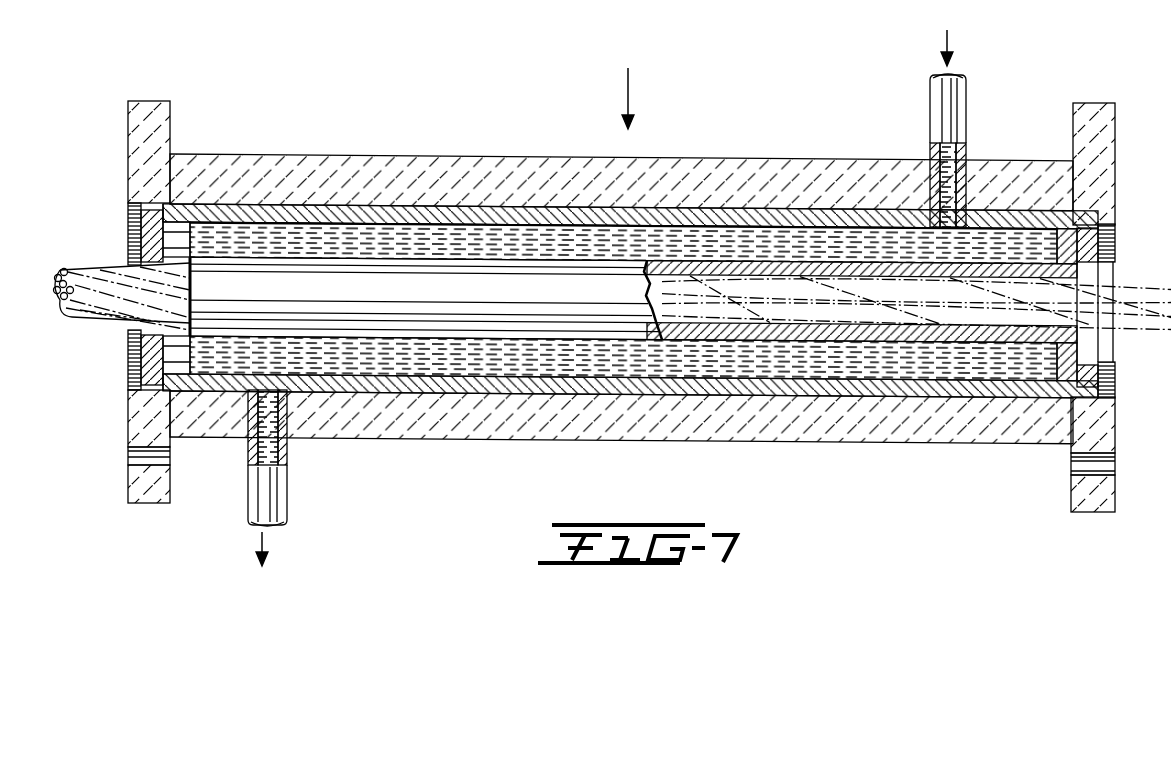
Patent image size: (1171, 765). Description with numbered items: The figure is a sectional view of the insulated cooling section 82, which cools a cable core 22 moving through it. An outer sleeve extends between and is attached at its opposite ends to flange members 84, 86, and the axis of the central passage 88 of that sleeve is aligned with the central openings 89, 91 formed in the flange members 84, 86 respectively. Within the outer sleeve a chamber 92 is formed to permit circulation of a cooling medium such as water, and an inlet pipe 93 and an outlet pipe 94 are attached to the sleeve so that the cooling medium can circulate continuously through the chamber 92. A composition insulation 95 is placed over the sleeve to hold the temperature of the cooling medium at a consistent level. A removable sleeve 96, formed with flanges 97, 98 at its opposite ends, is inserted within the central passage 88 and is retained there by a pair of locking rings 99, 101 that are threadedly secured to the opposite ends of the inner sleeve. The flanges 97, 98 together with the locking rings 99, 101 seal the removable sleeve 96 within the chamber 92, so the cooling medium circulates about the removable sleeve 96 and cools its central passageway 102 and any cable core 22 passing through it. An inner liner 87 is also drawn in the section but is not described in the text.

The cable core 22 is at (65, 326).
The insulated cooling section 82 is at (630, 87).
The flange member 84 is at (163, 127).
The flange member 86 is at (1100, 148).
The inner liner tube 87 is at (507, 205).
The central passage 88 is at (667, 234).
The central opening 89 is at (130, 215).
The central opening 91 is at (1108, 228).
The chamber 92 is at (752, 240).
The inlet pipe 93 is at (940, 128).
The outlet pipe 94 is at (278, 522).
The composition insulation 95 is at (805, 153).
The removable sleeve 96 is at (170, 331).
The flange 97 is at (197, 263).
The flange 98 is at (1095, 350).
The locking ring 99 is at (140, 240).
The locking ring 101 is at (1108, 243).
The central passageway 102 is at (648, 280).